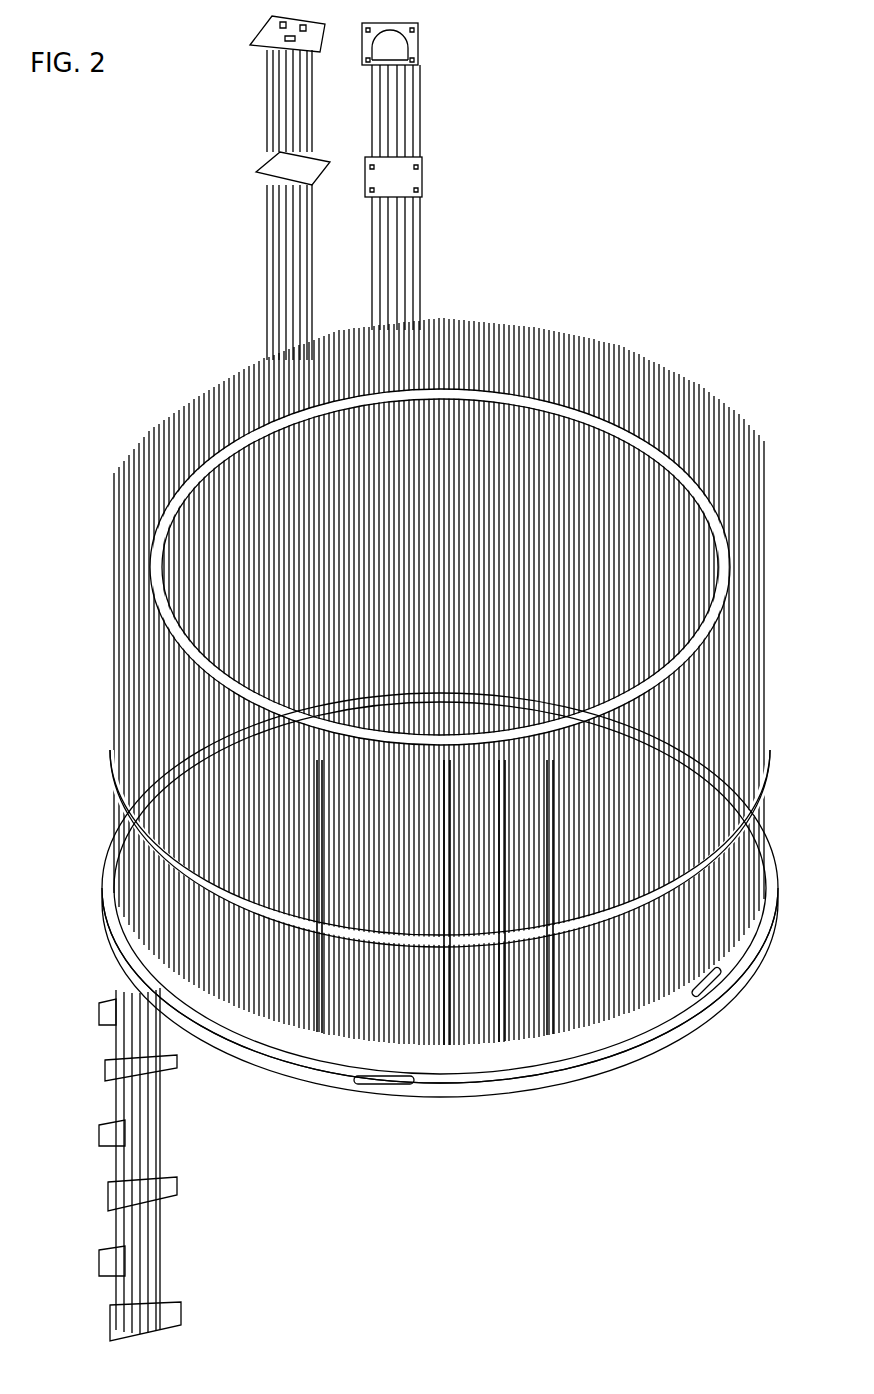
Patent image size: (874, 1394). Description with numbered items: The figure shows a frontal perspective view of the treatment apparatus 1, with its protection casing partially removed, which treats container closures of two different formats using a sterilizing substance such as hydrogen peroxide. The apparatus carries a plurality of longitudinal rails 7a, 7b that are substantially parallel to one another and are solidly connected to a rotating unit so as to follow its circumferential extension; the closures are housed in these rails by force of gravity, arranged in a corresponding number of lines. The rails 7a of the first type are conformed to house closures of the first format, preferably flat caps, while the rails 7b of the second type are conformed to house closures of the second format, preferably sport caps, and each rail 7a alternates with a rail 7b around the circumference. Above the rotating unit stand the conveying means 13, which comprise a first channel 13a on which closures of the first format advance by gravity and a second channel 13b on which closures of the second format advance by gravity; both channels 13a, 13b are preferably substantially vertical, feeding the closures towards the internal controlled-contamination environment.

The treatment apparatus 1 is at (152, 211).
The rail of the first type 7a is at (447, 1053).
The rail of the second type 7b is at (320, 1043).
The conveying means 13 is at (455, 68).
The first channel 13a is at (268, 127).
The second channel 13b is at (420, 118).